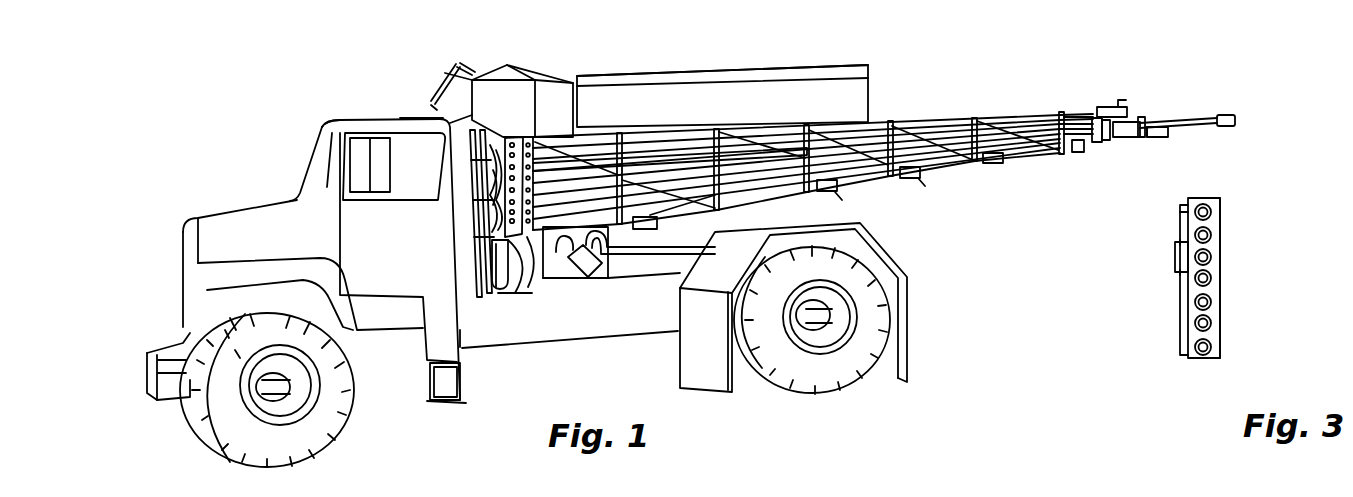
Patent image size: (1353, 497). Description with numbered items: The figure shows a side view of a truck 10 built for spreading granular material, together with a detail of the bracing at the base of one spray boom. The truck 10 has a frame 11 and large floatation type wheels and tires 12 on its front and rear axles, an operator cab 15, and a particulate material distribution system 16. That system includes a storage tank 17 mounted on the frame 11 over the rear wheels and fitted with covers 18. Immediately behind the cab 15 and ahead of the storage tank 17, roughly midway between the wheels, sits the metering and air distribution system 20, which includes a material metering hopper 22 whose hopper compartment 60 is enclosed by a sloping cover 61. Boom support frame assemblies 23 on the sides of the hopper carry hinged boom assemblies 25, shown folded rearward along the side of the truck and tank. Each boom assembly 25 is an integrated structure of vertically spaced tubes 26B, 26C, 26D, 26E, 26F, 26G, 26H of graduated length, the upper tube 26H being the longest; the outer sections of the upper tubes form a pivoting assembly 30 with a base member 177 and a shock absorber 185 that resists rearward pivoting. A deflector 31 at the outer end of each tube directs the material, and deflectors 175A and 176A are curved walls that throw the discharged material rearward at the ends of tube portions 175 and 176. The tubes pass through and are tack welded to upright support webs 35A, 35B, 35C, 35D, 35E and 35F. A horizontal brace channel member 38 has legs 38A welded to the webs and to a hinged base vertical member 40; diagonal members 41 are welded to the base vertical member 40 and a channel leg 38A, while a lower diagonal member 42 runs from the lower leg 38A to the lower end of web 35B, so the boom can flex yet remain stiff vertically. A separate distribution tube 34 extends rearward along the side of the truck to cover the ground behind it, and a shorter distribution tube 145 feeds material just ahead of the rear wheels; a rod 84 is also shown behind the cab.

In FIG. 1, the truck 10 is at (470, 417).
In FIG. 1, the frame 11 is at (502, 333).
In FIG. 1, the floatation type wheels and tires 12 is at (322, 433).
In FIG. 1, the operator cab 15 is at (330, 125).
In FIG. 1, the particulate material distribution system 16 is at (656, 78).
In FIG. 1, the storage tank 17 is at (777, 85).
In FIG. 1, the covers 18 is at (700, 70).
In FIG. 1, the metering and air distribution system 20 is at (455, 62).
In FIG. 1, the material metering hopper 22 is at (430, 100).
In FIG. 1, the boom support frame assemblies 23 is at (520, 133).
In FIG. 1, the boom assemblies 25 is at (928, 105).
In FIG. 3, the boom assemblies 25 is at (1223, 293).
In FIG. 1, the tube 26B is at (662, 222).
In FIG. 3, the tube 26B is at (1212, 347).
In FIG. 1, the tube 26C is at (782, 194).
In FIG. 3, the tube 26C is at (1212, 323).
In FIG. 1, the tube 26D is at (877, 177).
In FIG. 3, the tube 26D is at (1212, 302).
In FIG. 1, the tube 26E is at (950, 163).
In FIG. 3, the tube 26E is at (1212, 278).
In FIG. 1, the tube 26F is at (1027, 150).
In FIG. 3, the tube 26F is at (1212, 257).
In FIG. 1, the tube 26G is at (1037, 137).
In FIG. 3, the tube 26G is at (1212, 235).
In FIG. 1, the upper tube 26H is at (997, 120).
In FIG. 3, the upper tube 26H is at (1212, 212).
In FIG. 1, the pivoting assembly 30 is at (1150, 105).
In FIG. 1, the deflector 31 is at (830, 180).
In FIG. 1, the distribution tube 34 is at (650, 247).
In FIG. 1, the upright support web 35A is at (617, 137).
In FIG. 1, the upright support web 35B is at (715, 133).
In FIG. 3, the upright support web 35B is at (1215, 205).
In FIG. 1, the upright support web 35C is at (807, 127).
In FIG. 1, the upright support web 35D is at (892, 120).
In FIG. 1, the upright support web 35E is at (973, 120).
In FIG. 1, the upright support web 35F is at (1062, 112).
In FIG. 3, the horizontal brace channel member 38 is at (1175, 256).
In FIG. 3, the legs 38A is at (1180, 236).
In FIG. 1, the base vertical member 40 is at (527, 287).
In FIG. 3, the diagonal members 41 is at (1180, 213).
In FIG. 3, the lower diagonal member 42 is at (1180, 315).
In FIG. 1, the hopper compartment 60 is at (532, 207).
In FIG. 1, the cover 61 is at (490, 75).
In FIG. 1, the rod 84 is at (433, 102).
In FIG. 1, the shorter distribution tube 145 is at (573, 280).
In FIG. 1, the rod 175 is at (1200, 118).
In FIG. 1, the deflector 175A is at (1228, 126).
In FIG. 1, the coupling 176 is at (1130, 137).
In FIG. 1, the deflector 176A is at (1160, 130).
In FIG. 1, the base member 177 is at (1105, 107).
In FIG. 1, the shock absorber 185 is at (1118, 100).